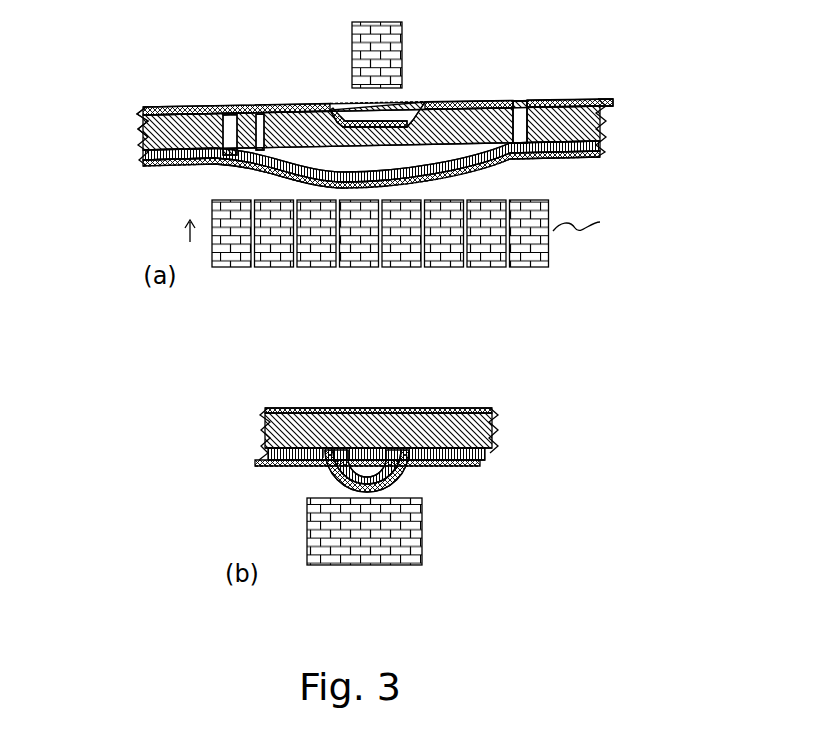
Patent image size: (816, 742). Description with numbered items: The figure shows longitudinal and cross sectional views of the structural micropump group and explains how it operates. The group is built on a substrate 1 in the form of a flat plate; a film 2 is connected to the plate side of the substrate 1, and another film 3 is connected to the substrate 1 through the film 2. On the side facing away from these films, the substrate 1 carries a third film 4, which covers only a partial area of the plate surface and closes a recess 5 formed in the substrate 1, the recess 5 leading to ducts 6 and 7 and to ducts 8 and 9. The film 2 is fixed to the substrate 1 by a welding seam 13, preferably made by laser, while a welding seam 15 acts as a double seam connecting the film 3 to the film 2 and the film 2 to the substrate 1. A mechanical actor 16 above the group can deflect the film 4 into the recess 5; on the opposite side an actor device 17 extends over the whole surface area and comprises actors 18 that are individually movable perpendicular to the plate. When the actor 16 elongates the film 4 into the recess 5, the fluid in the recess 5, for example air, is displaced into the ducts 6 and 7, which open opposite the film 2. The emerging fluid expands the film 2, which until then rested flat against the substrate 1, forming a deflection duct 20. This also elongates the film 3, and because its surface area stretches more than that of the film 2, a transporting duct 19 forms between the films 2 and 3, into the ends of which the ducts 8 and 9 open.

The substrate 1 is at (593, 122).
The film 2 is at (296, 162).
The film 3 is at (503, 173).
The third film 4 is at (412, 97).
The recess 5 is at (329, 106).
The duct 6 is at (233, 116).
The duct 7 is at (489, 120).
The duct 8 is at (145, 114).
The duct 9 is at (612, 104).
The welding seam 13 is at (233, 163).
The welding seam 15 is at (193, 157).
The mechanical actor 16 is at (403, 44).
The actor device 17 is at (437, 530).
The actors 18 is at (272, 258).
The transporting duct 19 is at (508, 165).
The deflection duct 20 is at (362, 467).